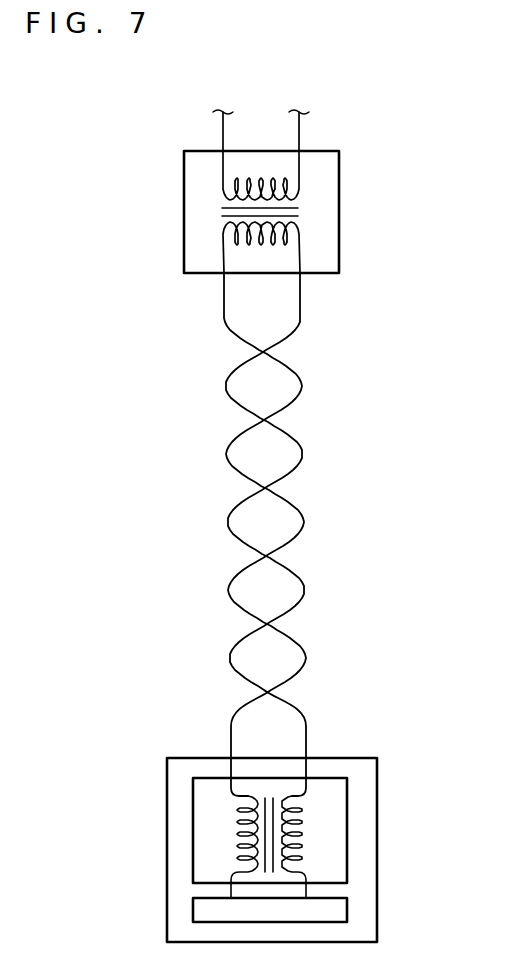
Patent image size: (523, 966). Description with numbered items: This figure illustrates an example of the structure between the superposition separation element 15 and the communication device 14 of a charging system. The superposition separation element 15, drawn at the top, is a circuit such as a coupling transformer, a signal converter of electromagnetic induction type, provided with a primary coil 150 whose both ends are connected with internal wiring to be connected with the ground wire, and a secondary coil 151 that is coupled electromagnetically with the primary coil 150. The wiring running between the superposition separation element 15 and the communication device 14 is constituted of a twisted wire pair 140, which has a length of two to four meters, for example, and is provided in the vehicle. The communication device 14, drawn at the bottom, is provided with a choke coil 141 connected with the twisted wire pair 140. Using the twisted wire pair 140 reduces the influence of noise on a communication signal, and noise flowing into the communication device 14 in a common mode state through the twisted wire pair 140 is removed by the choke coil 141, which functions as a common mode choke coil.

The communication device 14 is at (377, 790).
The choke coil 141 is at (347, 843).
The twisted wire pair 140 is at (293, 495).
The superposition separation element 15 is at (339, 210).
The primary coil 150 is at (307, 190).
The secondary coil 151 is at (307, 236).